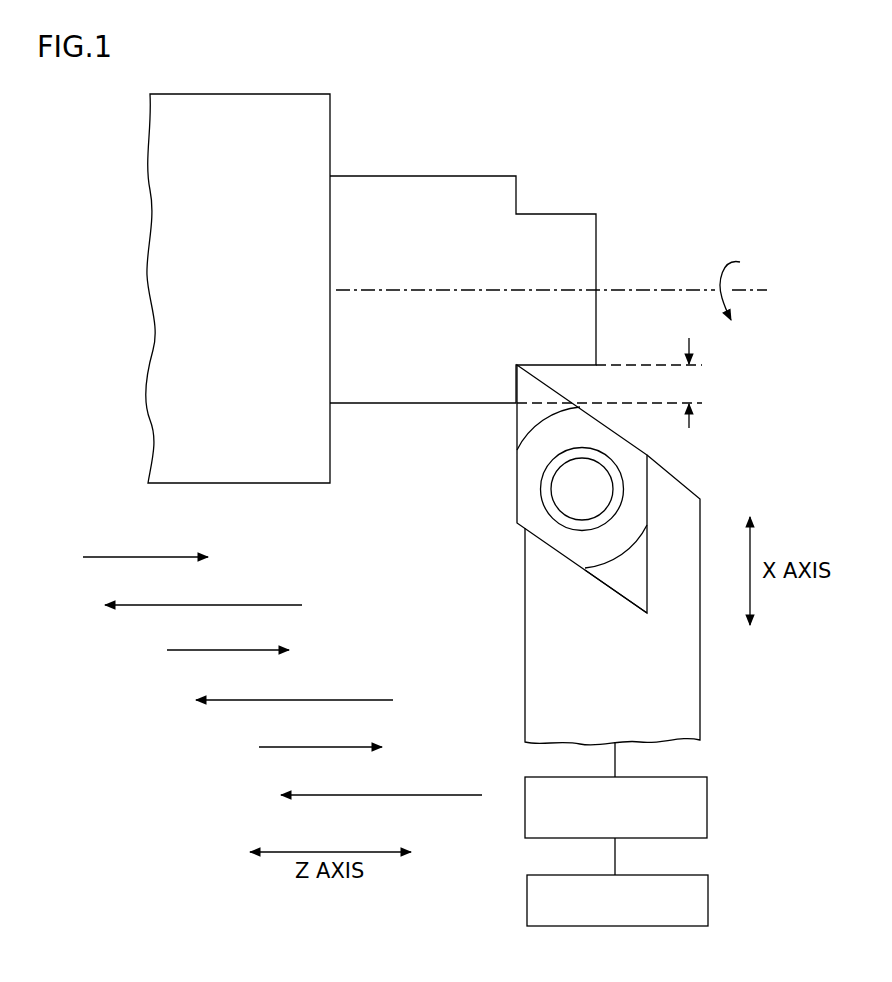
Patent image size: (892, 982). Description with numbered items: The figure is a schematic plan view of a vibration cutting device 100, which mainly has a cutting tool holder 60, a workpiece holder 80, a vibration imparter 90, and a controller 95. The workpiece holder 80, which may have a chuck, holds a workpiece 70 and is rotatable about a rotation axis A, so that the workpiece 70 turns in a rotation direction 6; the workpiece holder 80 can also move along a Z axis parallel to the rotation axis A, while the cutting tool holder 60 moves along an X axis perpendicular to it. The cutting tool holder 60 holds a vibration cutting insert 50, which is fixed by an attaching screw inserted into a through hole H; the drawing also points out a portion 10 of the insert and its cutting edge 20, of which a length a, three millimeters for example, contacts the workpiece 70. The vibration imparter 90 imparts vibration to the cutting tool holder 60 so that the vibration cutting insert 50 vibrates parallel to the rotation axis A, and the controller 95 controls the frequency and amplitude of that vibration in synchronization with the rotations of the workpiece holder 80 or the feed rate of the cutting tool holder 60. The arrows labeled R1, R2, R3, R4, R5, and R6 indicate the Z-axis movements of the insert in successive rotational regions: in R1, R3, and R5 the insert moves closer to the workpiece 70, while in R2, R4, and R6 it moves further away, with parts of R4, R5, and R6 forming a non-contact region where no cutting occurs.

The vibration cutting device 100 is at (758, 166).
The workpiece holder 80 is at (240, 122).
The workpiece 70 is at (438, 202).
The rotation direction 6 is at (721, 270).
The rotation axis A is at (748, 290).
The cutting insert 10 is at (537, 418).
The vibration cutting insert 50 is at (532, 478).
The through hole H is at (547, 505).
The cutting edge 20 is at (615, 580).
The cutting tool holder 60 is at (672, 692).
The length of the cutting edge in contact with workpiece a is at (612, 383).
The vibration imparter 90 is at (708, 805).
The controller 95 is at (708, 905).
The region R1 is at (430, 795).
The region R2 is at (315, 747).
The region R3 is at (315, 700).
The region R4 is at (243, 650).
The region R5 is at (243, 605).
The region R6 is at (160, 557).